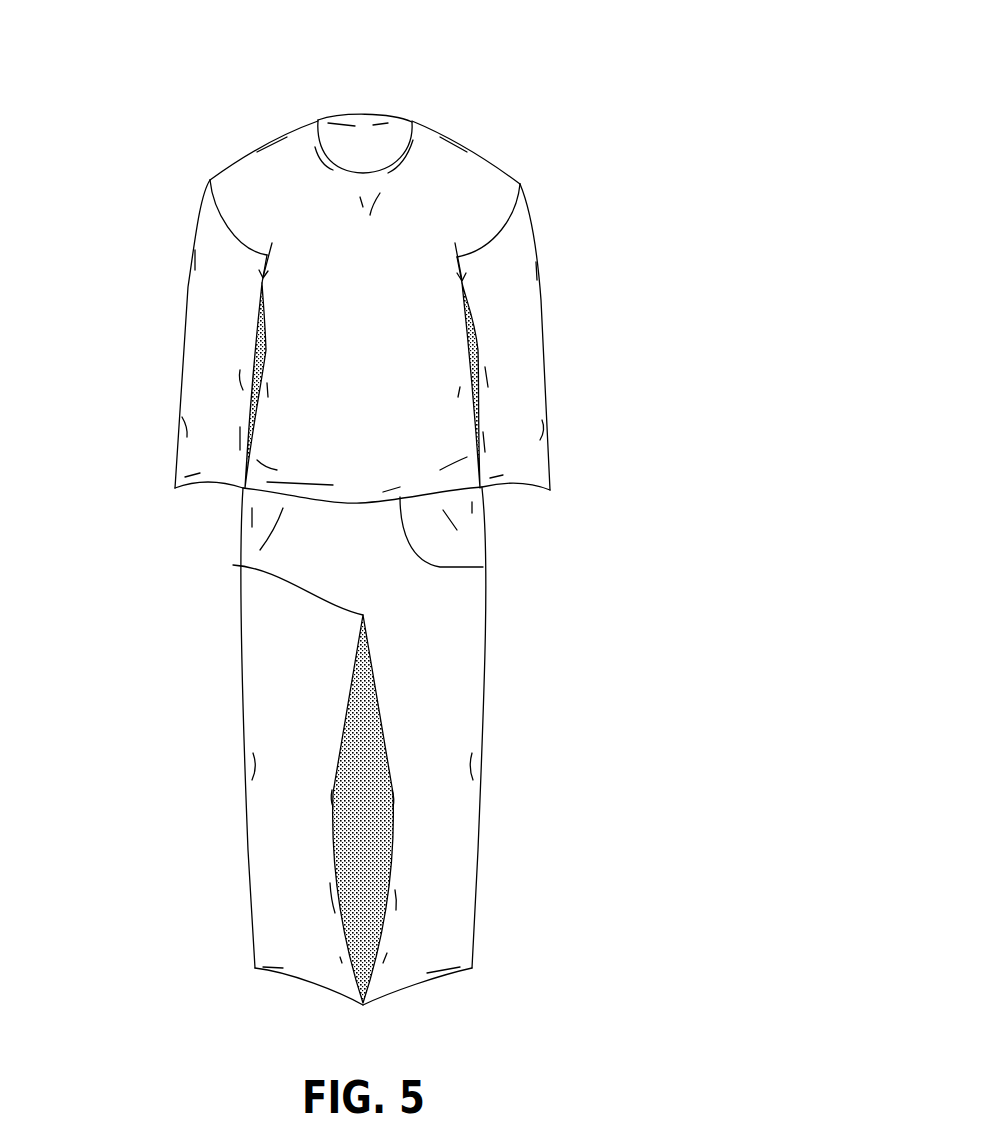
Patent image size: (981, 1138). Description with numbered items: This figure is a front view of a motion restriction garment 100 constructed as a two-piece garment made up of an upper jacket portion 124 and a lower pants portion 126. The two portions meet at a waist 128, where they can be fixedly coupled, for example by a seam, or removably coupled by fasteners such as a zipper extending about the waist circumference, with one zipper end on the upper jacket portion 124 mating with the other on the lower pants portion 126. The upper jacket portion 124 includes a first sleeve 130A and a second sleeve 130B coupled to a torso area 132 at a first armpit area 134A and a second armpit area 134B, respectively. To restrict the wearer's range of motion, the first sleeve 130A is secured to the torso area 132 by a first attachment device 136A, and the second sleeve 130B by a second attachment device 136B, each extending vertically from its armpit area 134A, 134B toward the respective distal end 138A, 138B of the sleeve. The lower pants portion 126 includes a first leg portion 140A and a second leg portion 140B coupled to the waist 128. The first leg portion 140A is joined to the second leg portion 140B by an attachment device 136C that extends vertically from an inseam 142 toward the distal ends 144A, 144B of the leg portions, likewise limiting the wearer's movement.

The garment 100 is at (574, 53).
The upper jacket portion 124 is at (522, 145).
The lower pants portion 126 is at (509, 651).
The waist 128 is at (483, 567).
The first sleeve 130A is at (187, 288).
The second sleeve 130B is at (545, 313).
The torso area 132 is at (423, 317).
The first armpit area 134A is at (267, 255).
The second armpit area 134B is at (457, 257).
The first attachment device 136A is at (222, 390).
The second attachment device 136B is at (503, 388).
The attachment device 136C is at (410, 853).
The distal end of first sleeve 138A is at (203, 487).
The distal end of second sleeve 138B is at (522, 487).
The first leg portion 140A is at (248, 728).
The second leg portion 140B is at (480, 727).
The inseam 142 is at (233, 565).
The distal end of first leg portion 144A is at (302, 982).
The distal end of second leg portion 144B is at (423, 982).